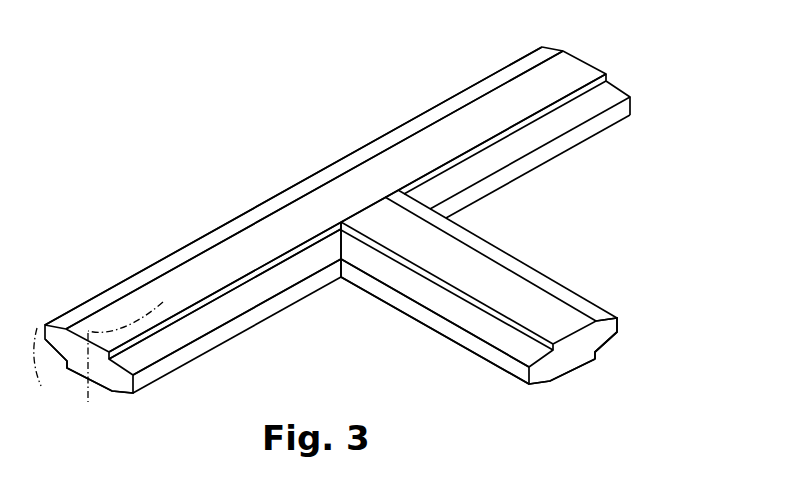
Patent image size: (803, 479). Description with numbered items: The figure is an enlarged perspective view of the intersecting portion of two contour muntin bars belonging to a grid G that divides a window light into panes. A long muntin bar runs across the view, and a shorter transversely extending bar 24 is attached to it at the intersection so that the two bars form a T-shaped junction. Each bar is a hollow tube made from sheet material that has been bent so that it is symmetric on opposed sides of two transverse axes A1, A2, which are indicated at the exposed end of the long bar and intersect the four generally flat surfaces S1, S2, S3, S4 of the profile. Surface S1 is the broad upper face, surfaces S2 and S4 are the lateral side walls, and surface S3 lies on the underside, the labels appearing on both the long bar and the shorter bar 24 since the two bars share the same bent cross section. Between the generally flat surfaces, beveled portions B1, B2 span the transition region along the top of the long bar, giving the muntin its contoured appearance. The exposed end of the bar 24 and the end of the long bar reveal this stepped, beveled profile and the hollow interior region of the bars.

The grid G is at (556, 222).
The shorter transversely extending bar 24 is at (509, 298).
The generally flat surface S1 is at (249, 254).
The generally flat surface S2 is at (191, 358).
The generally flat surface S3 is at (584, 371).
The generally flat surface S4 is at (93, 299).
The beveled portion B1 is at (538, 115).
The beveled portion B2 is at (556, 130).
The transverse axis A1 is at (140, 342).
The transverse axis A2 is at (52, 371).